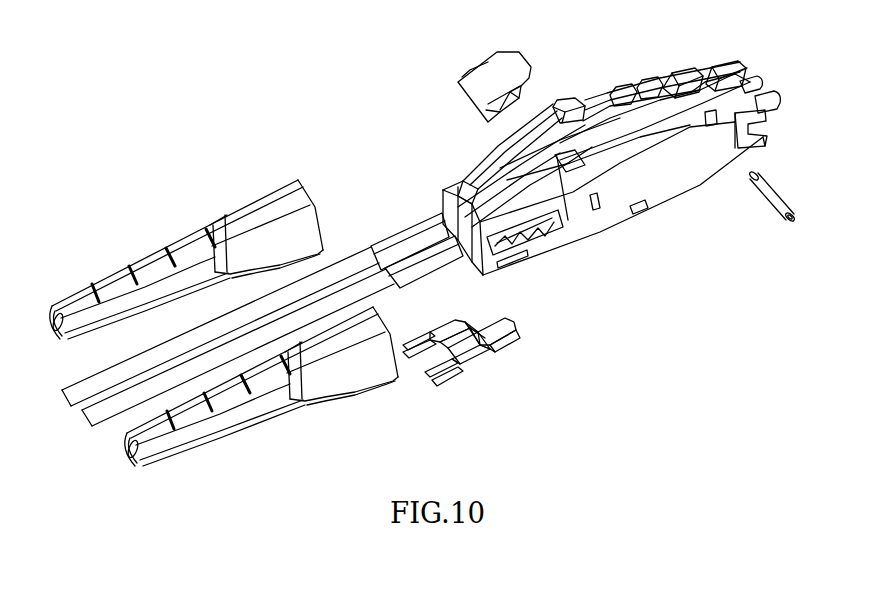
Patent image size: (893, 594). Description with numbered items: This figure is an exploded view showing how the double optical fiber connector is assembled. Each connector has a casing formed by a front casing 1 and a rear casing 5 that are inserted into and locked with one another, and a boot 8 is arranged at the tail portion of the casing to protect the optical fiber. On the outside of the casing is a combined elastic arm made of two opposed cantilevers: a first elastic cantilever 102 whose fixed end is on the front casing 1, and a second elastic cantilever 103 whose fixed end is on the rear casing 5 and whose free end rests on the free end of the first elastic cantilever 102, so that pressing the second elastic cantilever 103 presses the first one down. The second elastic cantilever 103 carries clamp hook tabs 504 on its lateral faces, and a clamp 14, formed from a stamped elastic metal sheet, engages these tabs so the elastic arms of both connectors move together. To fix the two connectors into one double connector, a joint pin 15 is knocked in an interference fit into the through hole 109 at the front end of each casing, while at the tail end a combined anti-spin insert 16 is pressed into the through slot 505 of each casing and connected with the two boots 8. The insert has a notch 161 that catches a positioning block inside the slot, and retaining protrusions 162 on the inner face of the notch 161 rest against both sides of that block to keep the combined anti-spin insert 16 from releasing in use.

The front casing 1 is at (643, 153).
The rear casing 5 is at (603, 215).
The boot 8 is at (186, 248).
The clamp 14 is at (476, 70).
The joint pin 15 is at (784, 183).
The combined anti-spin insert 16 is at (496, 369).
The first elastic cantilever 102 is at (674, 58).
The second elastic cantilever 103 is at (599, 111).
The through hole 109 is at (740, 55).
The notch 161 is at (534, 335).
The retaining protrusions 162 is at (519, 358).
The clamp hook tabs 504 is at (596, 215).
The through slot 505 is at (523, 278).